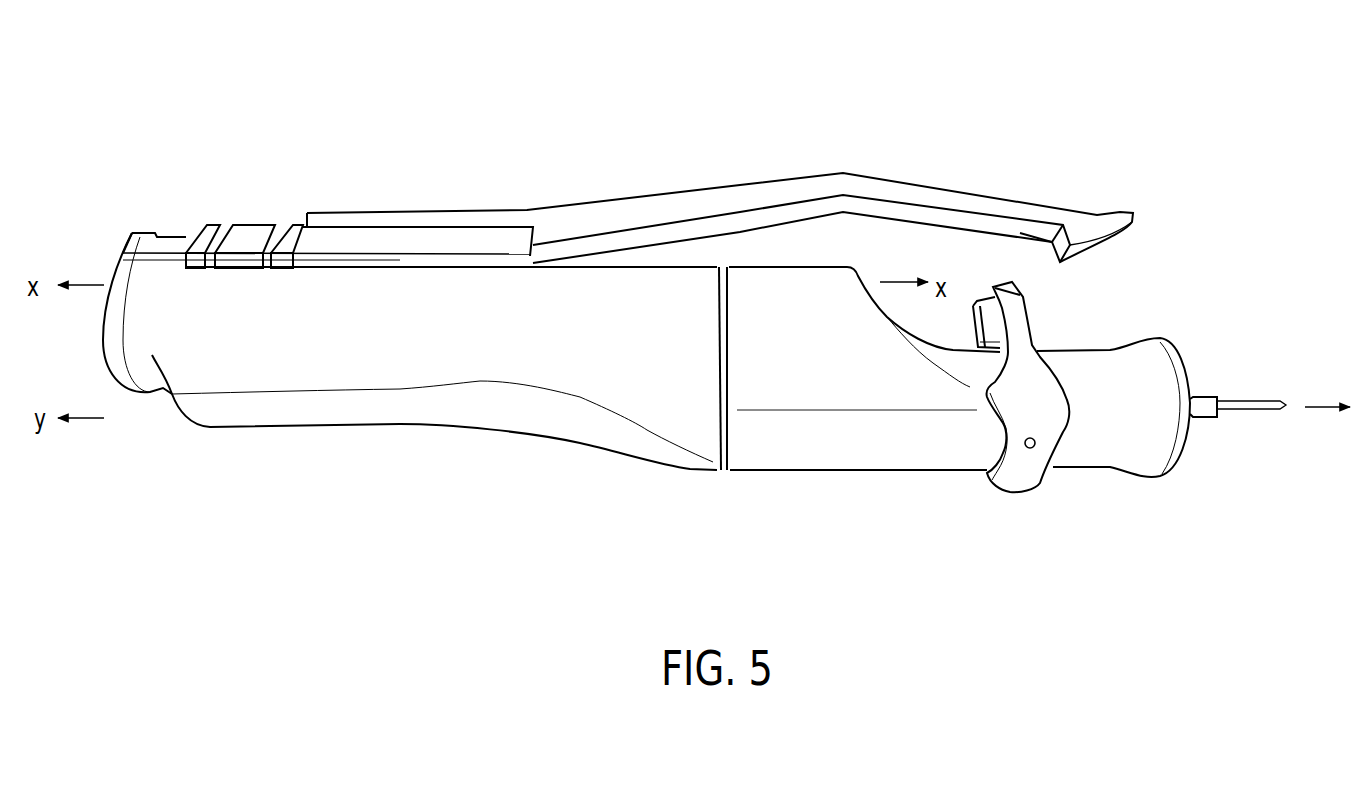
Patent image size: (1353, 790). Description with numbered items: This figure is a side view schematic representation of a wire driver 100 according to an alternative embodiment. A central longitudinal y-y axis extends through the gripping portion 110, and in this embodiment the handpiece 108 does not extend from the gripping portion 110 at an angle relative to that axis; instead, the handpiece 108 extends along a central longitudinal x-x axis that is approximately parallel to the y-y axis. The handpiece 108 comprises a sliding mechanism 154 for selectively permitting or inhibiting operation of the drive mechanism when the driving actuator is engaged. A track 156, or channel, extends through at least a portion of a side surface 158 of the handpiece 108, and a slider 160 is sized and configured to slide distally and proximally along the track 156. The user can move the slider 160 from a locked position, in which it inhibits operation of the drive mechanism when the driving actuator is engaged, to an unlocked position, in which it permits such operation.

The wire driver 100 is at (733, 135).
The handpiece 108 is at (172, 235).
The gripping portion 110 is at (835, 472).
The sliding mechanism 154 is at (251, 207).
The track 156 is at (338, 268).
The side surface 158 is at (415, 240).
The slider 160 is at (210, 222).